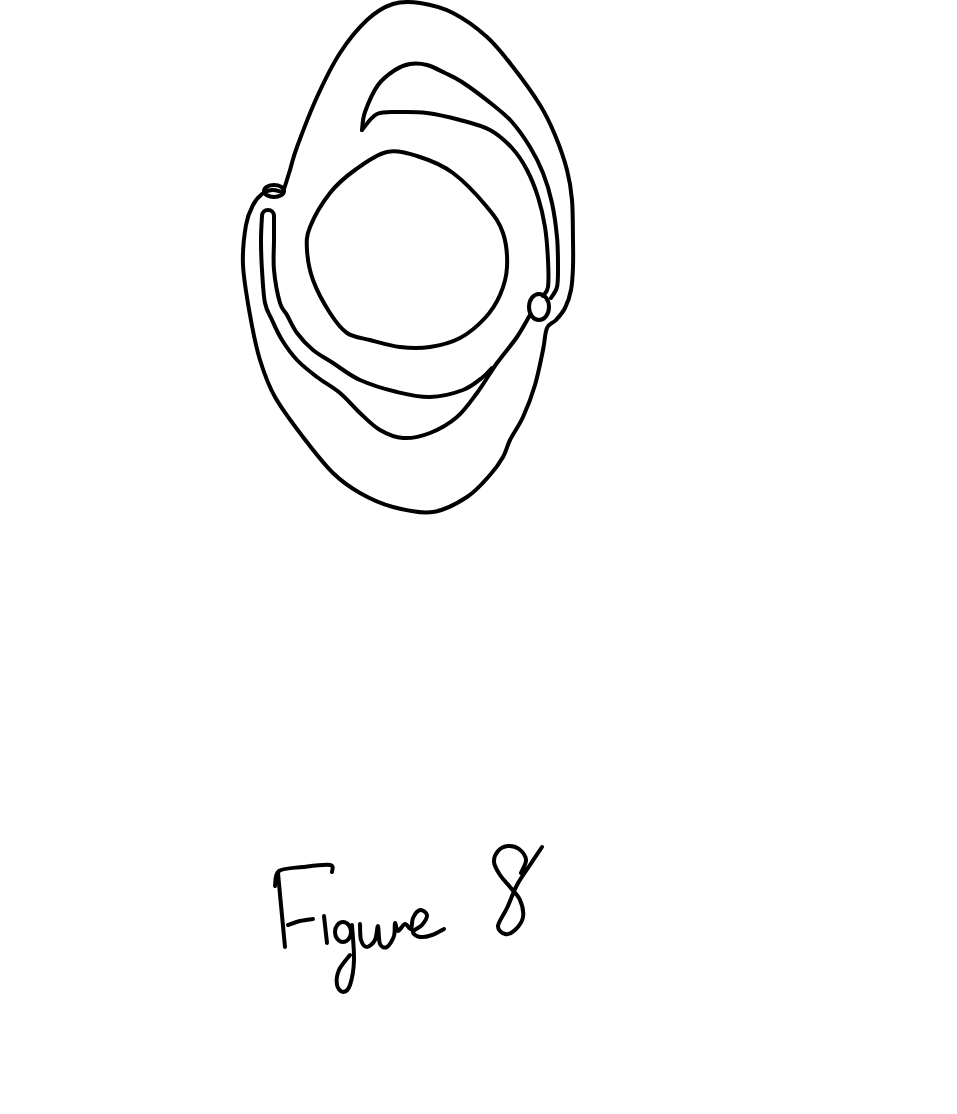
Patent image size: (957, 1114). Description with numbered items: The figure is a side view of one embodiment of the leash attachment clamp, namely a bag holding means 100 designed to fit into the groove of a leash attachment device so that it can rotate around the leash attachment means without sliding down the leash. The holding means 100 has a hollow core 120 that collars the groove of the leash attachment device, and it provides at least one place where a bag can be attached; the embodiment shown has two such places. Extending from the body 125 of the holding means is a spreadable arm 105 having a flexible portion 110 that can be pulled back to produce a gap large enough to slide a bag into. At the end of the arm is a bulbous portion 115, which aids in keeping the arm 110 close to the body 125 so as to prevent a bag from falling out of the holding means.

The bag holding means 100 is at (593, 693).
The spreadable arm 105 is at (520, 420).
The flexible portion 110 is at (348, 465).
The bulbous portion 115 is at (270, 194).
The hollow core 120 is at (467, 257).
The body 125 is at (337, 341).